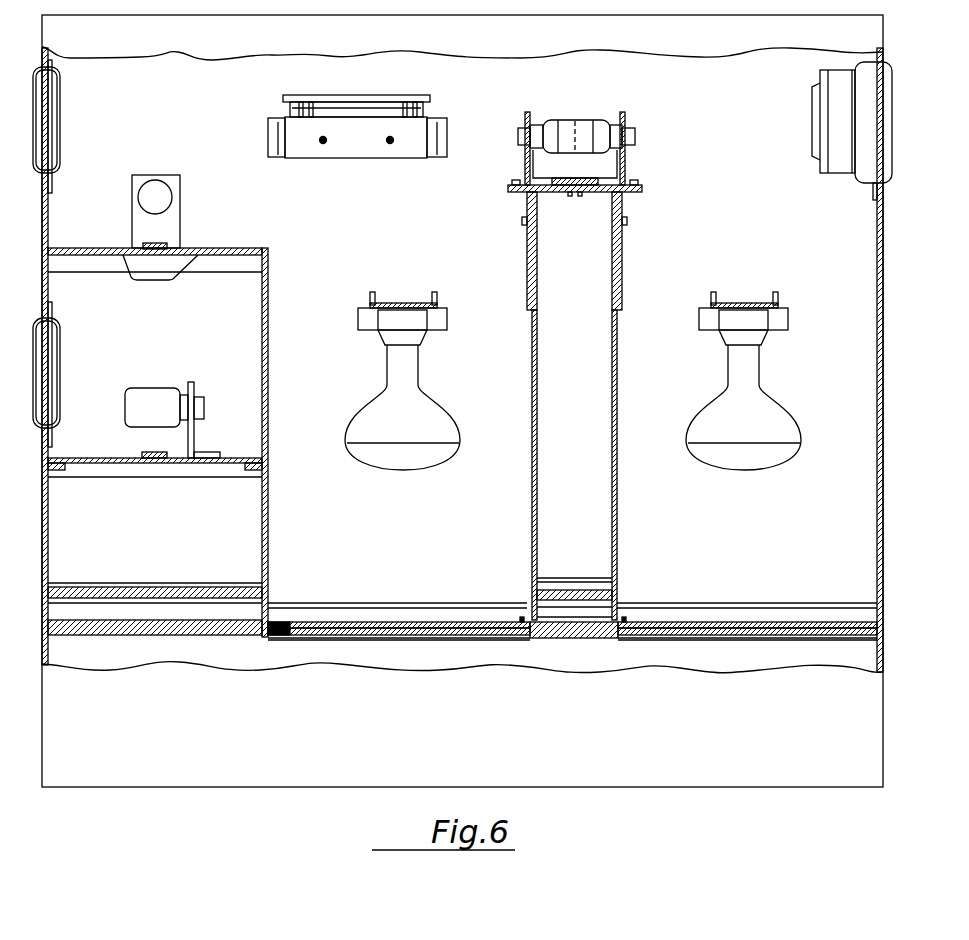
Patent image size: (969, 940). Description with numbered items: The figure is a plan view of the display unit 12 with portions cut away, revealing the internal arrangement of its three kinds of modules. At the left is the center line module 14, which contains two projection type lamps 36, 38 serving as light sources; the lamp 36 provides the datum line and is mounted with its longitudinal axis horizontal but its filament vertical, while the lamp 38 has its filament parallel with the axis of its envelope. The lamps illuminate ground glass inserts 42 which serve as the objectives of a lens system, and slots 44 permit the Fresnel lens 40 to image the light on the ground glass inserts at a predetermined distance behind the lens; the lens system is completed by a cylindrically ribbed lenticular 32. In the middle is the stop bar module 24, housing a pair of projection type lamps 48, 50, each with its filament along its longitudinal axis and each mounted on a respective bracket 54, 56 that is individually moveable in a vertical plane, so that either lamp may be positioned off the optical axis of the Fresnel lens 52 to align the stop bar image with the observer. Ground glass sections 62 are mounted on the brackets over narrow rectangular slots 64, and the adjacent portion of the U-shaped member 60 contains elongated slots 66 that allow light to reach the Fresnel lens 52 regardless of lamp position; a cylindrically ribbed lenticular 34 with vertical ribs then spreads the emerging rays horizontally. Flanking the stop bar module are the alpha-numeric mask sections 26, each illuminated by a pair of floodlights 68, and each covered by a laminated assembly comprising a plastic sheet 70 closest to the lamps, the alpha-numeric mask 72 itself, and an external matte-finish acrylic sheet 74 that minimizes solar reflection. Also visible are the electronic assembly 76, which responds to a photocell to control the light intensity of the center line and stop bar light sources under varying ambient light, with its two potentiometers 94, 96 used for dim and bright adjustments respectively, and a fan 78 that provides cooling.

The display unit 12 is at (183, 789).
The center line module 14 is at (177, 562).
The stop bar module 24 is at (562, 508).
The mask sections 26 is at (393, 538).
The cylindrically ribbed lenticular 32 is at (90, 635).
The cylindrically ribbed lenticular 34 is at (573, 638).
The projection type lamp 36 is at (153, 388).
The projection type lamp 38 is at (157, 190).
The Fresnel lens 40 is at (95, 587).
The ground glass inserts 42 is at (147, 243).
The slots 44 is at (155, 270).
The projection type lamp 48 is at (583, 125).
The projection type lamp 50 is at (548, 123).
The Fresnel lens 52 is at (566, 590).
The bracket 54 is at (624, 112).
The bracket 56 is at (526, 112).
The U-shaped member 60 is at (618, 290).
The ground glass sections 62 is at (553, 178).
The narrow rectangular slots 64 is at (558, 192).
The elongated slots 66 is at (580, 197).
The floodlights 68 is at (440, 412).
The plastic sheet 70 is at (335, 622).
The alpha-numeric mask 72 is at (410, 630).
The matte-finish acrylic sheet 74 is at (460, 640).
The electronic assembly 76 is at (352, 158).
The fan 78 is at (826, 122).
The potentiometer 94 is at (323, 144).
The potentiometer 96 is at (390, 144).